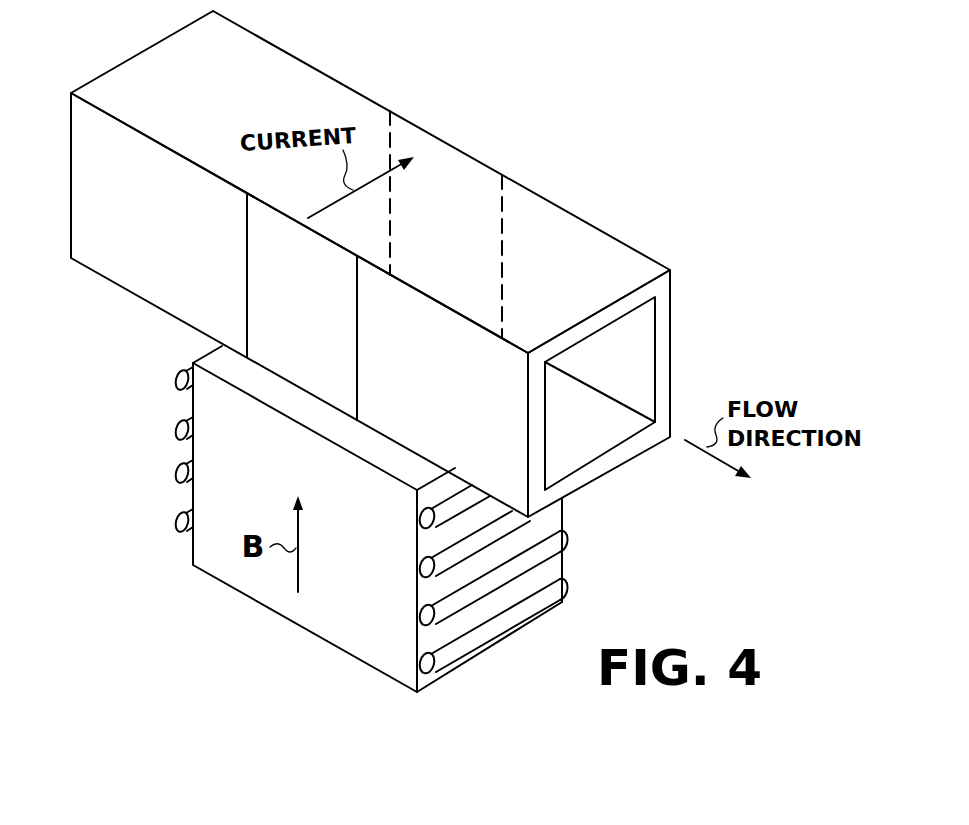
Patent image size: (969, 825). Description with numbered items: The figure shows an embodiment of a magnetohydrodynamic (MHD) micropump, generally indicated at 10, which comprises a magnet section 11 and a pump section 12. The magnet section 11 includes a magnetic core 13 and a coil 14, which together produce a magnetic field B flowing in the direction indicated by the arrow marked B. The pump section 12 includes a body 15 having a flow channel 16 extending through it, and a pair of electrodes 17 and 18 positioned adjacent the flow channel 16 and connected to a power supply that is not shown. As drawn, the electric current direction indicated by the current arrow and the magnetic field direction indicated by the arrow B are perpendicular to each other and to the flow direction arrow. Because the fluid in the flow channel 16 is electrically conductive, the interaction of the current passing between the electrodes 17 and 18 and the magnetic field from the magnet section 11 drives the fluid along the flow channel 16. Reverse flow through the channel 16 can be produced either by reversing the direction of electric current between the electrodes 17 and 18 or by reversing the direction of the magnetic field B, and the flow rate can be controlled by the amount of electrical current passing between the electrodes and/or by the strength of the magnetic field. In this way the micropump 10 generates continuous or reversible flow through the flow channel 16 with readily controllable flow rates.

The MHD micropump 10 is at (130, 354).
The magnet section 11 is at (133, 498).
The pump section 12 is at (472, 84).
The magnetic core 13 is at (380, 632).
The coil 14 is at (178, 384).
The body 15 is at (621, 244).
The flow channel 16 is at (628, 368).
The electrode 17 is at (272, 300).
The electrode 18 is at (463, 230).